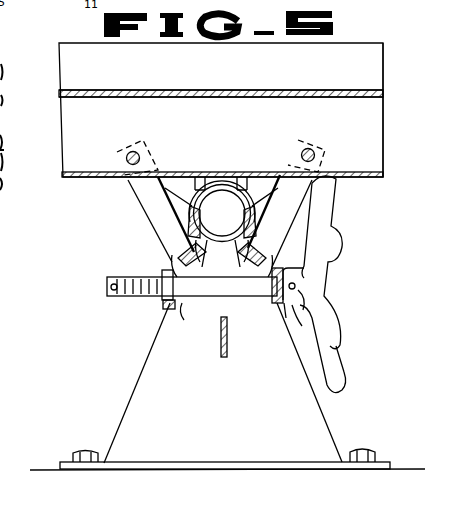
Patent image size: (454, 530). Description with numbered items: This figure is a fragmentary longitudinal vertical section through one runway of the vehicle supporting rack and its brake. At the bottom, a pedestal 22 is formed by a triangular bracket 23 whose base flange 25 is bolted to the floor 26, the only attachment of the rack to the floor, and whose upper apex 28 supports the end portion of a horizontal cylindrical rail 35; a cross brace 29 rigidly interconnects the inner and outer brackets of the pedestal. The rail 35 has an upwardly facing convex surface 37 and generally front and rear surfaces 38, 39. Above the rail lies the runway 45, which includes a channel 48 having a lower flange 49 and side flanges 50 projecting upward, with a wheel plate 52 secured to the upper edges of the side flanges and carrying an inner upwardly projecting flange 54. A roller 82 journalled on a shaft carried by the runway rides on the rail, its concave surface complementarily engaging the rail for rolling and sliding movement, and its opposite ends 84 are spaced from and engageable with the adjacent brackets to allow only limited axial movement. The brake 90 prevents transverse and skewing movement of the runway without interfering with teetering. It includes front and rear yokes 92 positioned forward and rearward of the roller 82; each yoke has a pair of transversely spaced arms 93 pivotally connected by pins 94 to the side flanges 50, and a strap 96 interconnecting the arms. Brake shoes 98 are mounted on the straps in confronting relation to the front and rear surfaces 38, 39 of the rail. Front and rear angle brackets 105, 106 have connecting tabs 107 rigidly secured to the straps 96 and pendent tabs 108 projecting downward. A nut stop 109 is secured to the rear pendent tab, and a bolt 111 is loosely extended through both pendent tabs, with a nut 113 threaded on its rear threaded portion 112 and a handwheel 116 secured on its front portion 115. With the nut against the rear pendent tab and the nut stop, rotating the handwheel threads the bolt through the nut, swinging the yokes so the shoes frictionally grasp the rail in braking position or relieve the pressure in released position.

The pedestal 22 is at (128, 412).
The triangular bracket 23 is at (232, 431).
The base flange 25 is at (182, 462).
The floor 26 is at (405, 467).
The upper apex 28 is at (221, 252).
The cross brace 29 is at (225, 358).
The rail 35 is at (218, 173).
The convex surface 37 is at (209, 174).
The front surface 38 is at (280, 221).
The rear surface 39 is at (161, 219).
The runway 45 is at (344, 88).
The channel 48 is at (108, 127).
The lower flange 49 is at (330, 173).
The side flange 50 is at (376, 121).
The wheel plate 52 is at (163, 90).
The inner upwardly projecting flange 54 is at (284, 73).
The roller 82 is at (238, 177).
The roller end 84 is at (288, 198).
The brake 90 is at (304, 204).
The yoke 92 is at (174, 241).
The arm 93 is at (130, 180).
The pin 94 is at (127, 160).
The strap 96 is at (173, 262).
The brake shoe 98 is at (219, 226).
The front angle bracket 105 is at (275, 303).
The rear angle bracket 106 is at (180, 306).
The connecting tab 107 is at (250, 256).
The pendent tab 108 is at (172, 318).
The nut stop 109 is at (167, 306).
The bolt 111 is at (218, 285).
The rear threaded portion 112 is at (123, 278).
The nut 113 is at (166, 292).
The front portion 115 is at (257, 285).
The handwheel 116 is at (320, 312).